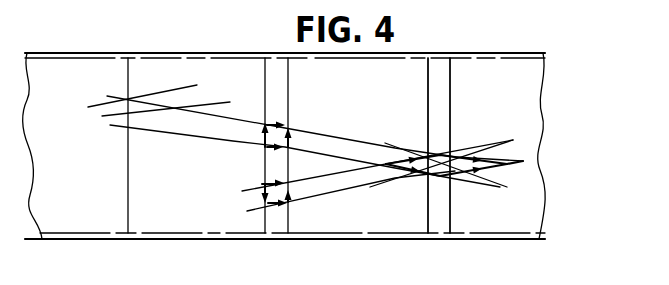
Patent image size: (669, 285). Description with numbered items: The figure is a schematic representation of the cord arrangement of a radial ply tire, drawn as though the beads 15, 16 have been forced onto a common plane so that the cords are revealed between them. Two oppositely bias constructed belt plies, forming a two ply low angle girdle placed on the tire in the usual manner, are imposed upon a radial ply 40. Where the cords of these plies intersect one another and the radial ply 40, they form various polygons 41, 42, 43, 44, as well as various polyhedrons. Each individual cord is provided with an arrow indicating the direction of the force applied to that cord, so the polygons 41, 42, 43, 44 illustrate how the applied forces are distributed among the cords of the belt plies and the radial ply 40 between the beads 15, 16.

The bead 15 is at (64, 240).
The bead 16 is at (63, 53).
The radial ply 40 is at (442, 98).
The polygon 41 is at (393, 165).
The polygon 42 is at (288, 126).
The polygon 43 is at (288, 204).
The polygon 44 is at (140, 113).